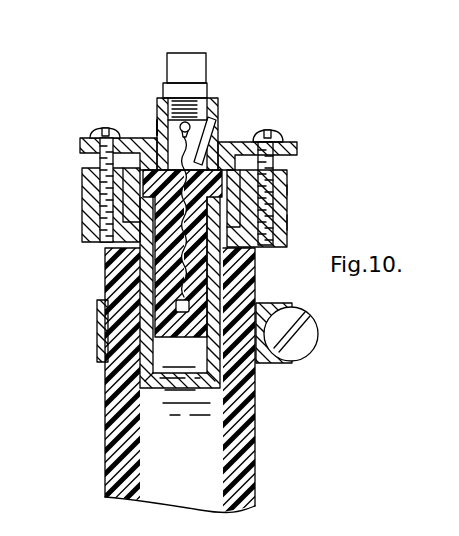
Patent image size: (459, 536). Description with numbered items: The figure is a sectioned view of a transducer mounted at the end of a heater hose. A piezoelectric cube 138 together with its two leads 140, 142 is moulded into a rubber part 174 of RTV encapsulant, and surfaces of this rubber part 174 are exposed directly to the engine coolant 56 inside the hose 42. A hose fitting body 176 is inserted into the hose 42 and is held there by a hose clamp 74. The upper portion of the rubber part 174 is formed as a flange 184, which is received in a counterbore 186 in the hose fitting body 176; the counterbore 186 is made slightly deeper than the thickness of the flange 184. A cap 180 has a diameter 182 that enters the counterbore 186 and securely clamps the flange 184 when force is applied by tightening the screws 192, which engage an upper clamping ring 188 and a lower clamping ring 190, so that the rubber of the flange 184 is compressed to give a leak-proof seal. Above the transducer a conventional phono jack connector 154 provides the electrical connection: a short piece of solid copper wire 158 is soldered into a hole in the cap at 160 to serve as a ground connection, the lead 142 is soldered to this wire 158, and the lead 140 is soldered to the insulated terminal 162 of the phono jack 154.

The hose 42 is at (256, 462).
The engine coolant 56 is at (213, 430).
The hose clamp 74 is at (318, 338).
The piezoelectric cube 138 is at (215, 290).
The lead 140 is at (287, 172).
The lead 142 is at (288, 190).
The phono jack connector 154 is at (208, 57).
The solid copper wire 158 is at (215, 115).
The solder point 160 is at (222, 128).
The insulated terminal 162 is at (157, 127).
The rubber part 174 is at (192, 306).
The hose fitting body 176 is at (225, 380).
The cap 180 is at (217, 100).
The diameter of cap 182 is at (140, 153).
The flange 184 is at (140, 179).
The counterbore 186 is at (140, 190).
The upper clamping ring 188 is at (288, 147).
The lower clamping ring 190 is at (287, 222).
The screws 192 is at (97, 127).